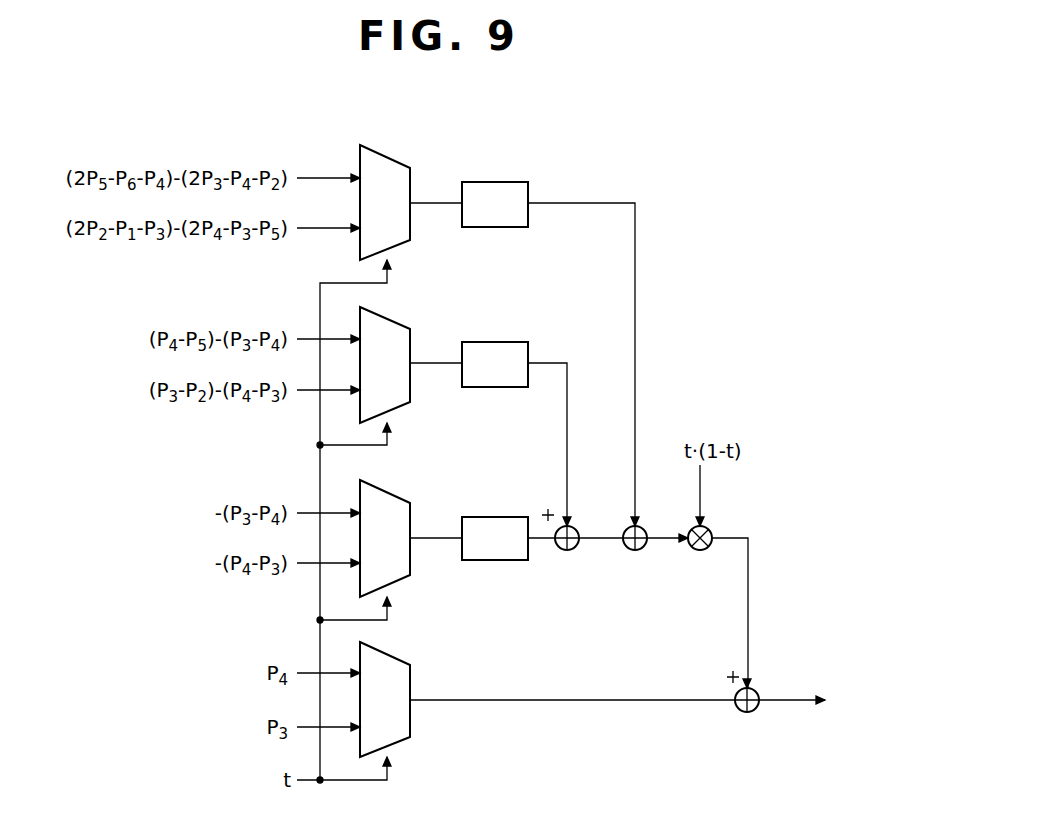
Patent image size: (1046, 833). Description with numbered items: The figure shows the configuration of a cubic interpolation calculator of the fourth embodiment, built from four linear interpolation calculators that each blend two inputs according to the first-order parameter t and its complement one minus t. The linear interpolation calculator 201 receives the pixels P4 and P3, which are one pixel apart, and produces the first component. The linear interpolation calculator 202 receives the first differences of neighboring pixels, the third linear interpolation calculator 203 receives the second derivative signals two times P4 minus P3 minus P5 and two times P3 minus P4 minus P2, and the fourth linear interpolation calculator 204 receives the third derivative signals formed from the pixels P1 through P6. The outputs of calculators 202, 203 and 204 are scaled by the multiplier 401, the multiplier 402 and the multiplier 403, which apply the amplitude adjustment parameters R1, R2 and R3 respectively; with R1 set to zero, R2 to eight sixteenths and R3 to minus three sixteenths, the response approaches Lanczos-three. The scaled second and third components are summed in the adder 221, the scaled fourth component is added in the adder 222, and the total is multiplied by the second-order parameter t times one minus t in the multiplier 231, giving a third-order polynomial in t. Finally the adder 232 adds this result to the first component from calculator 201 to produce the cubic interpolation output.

The linear interpolation calculator 201 is at (397, 659).
The linear interpolation calculator 202 is at (397, 497).
The third linear interpolation calculator 203 is at (397, 324).
The fourth linear interpolation calculator 204 is at (397, 162).
The multiplier 401 is at (513, 517).
The multiplier 402 is at (513, 342).
The multiplier 403 is at (513, 182).
The adder 221 is at (567, 550).
The adder 222 is at (635, 550).
The multiplier 231 is at (710, 530).
The adder 232 is at (757, 691).